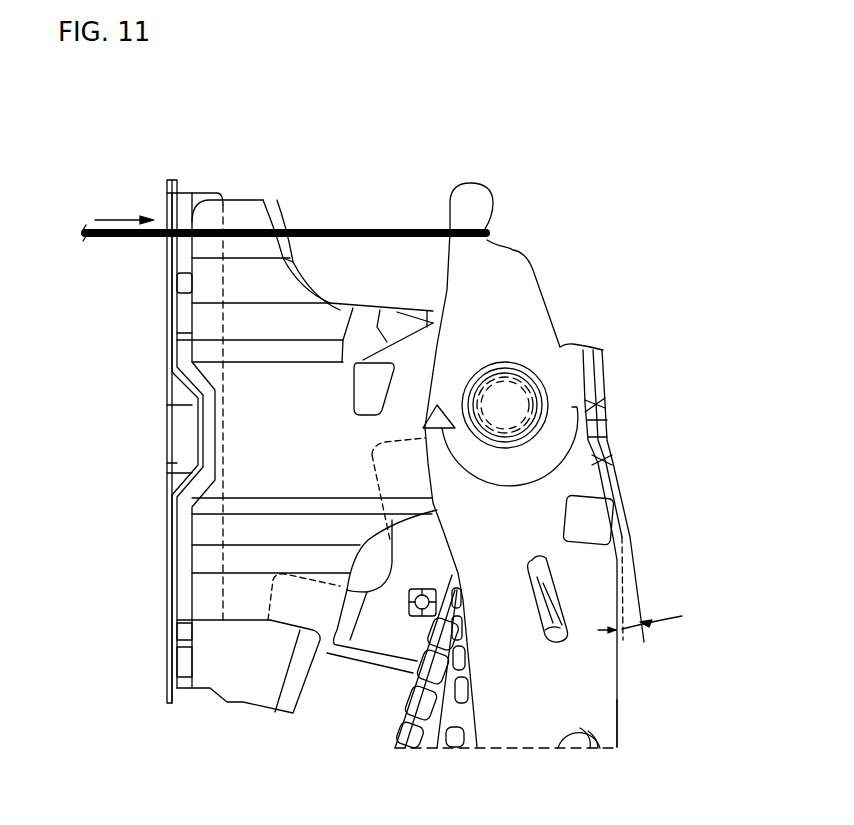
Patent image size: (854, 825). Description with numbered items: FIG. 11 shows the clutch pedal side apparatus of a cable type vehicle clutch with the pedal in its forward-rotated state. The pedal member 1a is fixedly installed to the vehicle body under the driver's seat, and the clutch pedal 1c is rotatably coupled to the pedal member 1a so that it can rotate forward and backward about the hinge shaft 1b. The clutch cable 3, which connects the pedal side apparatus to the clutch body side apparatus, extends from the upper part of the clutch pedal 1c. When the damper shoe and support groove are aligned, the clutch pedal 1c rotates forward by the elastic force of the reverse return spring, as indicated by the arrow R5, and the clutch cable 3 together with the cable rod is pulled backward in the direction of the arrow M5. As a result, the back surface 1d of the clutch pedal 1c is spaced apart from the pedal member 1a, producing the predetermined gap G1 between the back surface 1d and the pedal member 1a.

The pedal member 1a is at (237, 433).
The hinge shaft 1b is at (507, 402).
The clutch pedal 1c is at (607, 725).
The back surface 1d is at (620, 685).
The clutch cable 3 is at (364, 227).
The arrow indicating backward pulling direction M5 is at (124, 211).
The arrow indicating forward rotation of clutch pedal R5 is at (500, 458).
The predetermined gap G1 is at (640, 614).